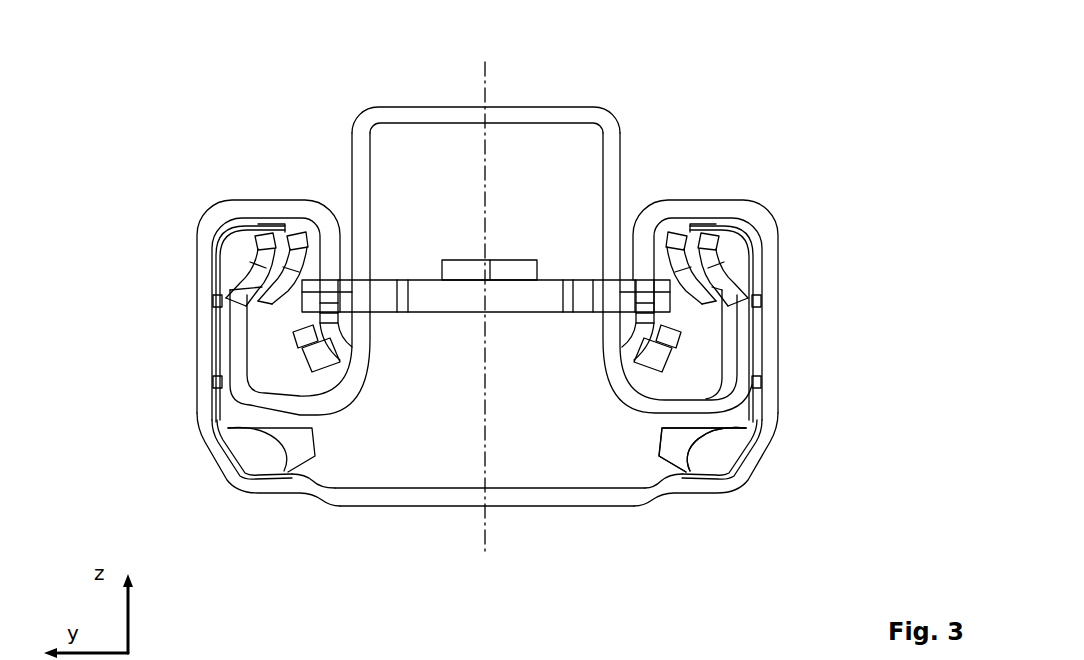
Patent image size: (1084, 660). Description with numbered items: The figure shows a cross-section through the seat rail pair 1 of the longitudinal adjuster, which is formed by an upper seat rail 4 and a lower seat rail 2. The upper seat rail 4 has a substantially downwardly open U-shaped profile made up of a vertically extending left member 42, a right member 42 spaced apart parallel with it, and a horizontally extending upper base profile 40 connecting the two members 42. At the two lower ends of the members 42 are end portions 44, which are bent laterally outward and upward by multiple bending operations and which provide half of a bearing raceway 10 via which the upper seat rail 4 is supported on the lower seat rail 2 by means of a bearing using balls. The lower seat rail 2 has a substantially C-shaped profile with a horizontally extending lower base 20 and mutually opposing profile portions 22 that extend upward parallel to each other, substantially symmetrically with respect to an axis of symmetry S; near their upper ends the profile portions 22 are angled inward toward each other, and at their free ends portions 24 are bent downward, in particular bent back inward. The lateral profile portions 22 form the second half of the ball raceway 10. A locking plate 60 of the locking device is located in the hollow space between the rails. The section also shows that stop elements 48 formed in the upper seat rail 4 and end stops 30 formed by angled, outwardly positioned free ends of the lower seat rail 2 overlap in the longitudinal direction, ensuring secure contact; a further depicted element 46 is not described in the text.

The seat rail pair 1 is at (216, 96).
The lower seat rail 2 is at (487, 500).
The upper seat rail 4 is at (486, 170).
The bearing raceway 10 is at (727, 344).
The lower base 20 is at (565, 502).
The profile portions 22 is at (770, 392).
The portions bent downward 24 is at (640, 325).
The end stops 30 is at (370, 356).
The upper base profile 40 is at (463, 120).
The members 42 is at (612, 188).
The end portions 44 is at (730, 322).
The support element 46 is at (692, 418).
The stop elements 48 is at (333, 350).
The locking plate 60 is at (470, 290).
The axis of symmetry S is at (486, 100).